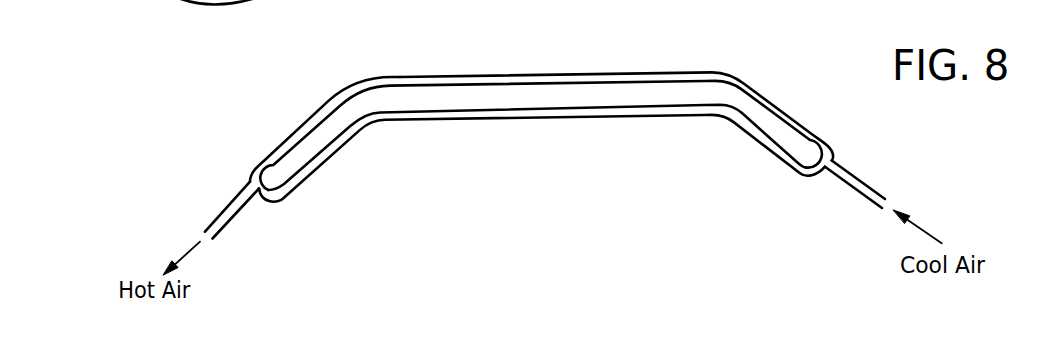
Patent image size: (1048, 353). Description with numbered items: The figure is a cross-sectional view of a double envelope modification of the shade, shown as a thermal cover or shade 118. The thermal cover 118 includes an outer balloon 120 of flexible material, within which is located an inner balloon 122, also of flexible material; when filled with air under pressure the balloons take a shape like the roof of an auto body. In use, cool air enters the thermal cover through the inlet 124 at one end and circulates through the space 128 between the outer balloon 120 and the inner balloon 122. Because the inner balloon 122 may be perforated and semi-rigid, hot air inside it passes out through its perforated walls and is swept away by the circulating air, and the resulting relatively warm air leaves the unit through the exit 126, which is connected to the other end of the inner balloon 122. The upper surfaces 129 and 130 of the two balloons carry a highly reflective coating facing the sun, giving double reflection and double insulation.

The thermal cover or shade 118 is at (498, 66).
The outer balloon 120 is at (356, 83).
The inner balloon 122 is at (440, 117).
The inlet 124 is at (870, 187).
The exit 126 is at (226, 208).
The space 128 is at (632, 79).
The upper surface 129 is at (570, 74).
The upper surface 130 is at (615, 108).